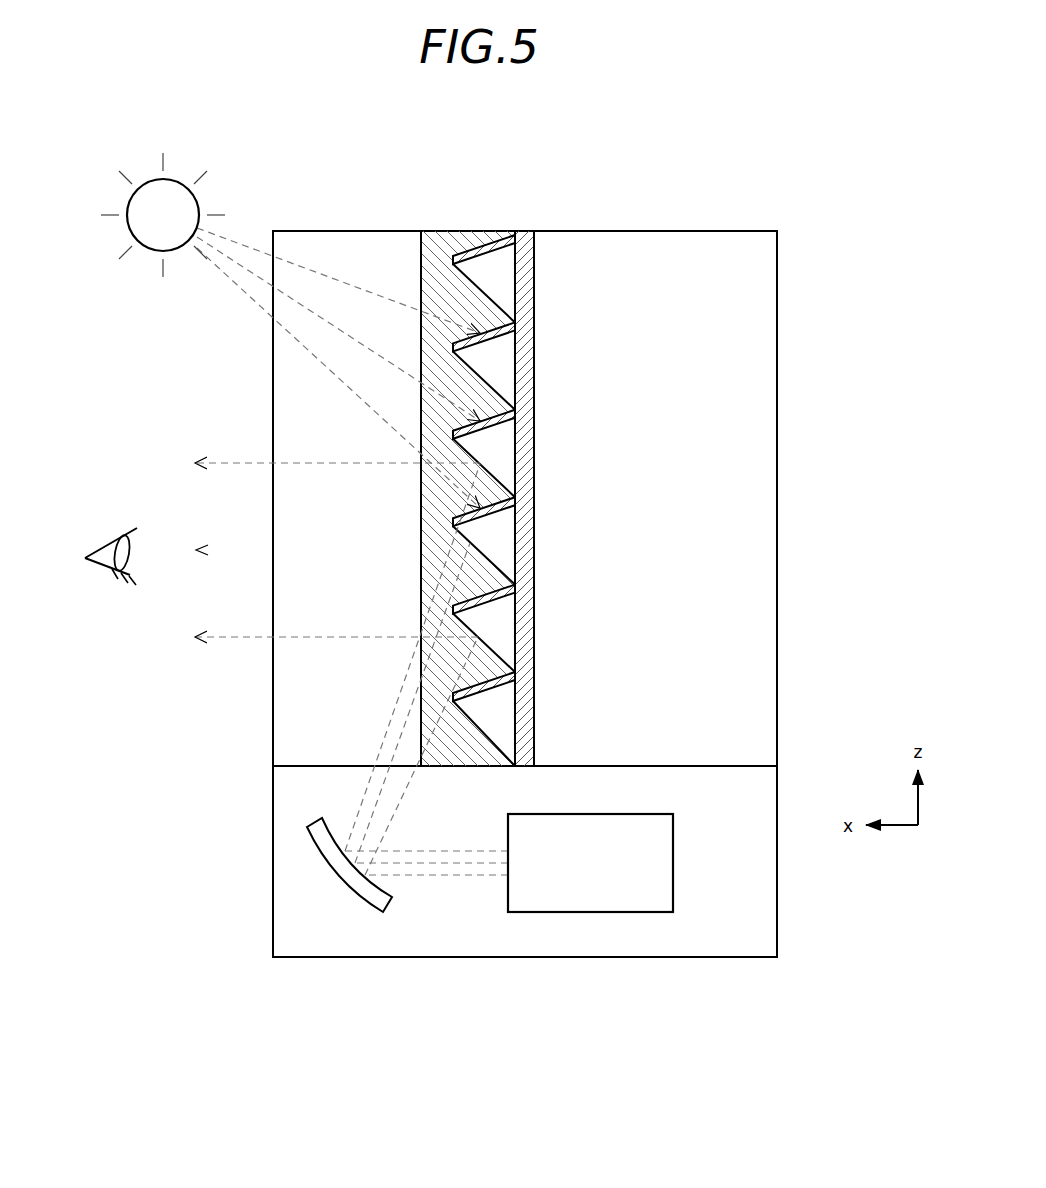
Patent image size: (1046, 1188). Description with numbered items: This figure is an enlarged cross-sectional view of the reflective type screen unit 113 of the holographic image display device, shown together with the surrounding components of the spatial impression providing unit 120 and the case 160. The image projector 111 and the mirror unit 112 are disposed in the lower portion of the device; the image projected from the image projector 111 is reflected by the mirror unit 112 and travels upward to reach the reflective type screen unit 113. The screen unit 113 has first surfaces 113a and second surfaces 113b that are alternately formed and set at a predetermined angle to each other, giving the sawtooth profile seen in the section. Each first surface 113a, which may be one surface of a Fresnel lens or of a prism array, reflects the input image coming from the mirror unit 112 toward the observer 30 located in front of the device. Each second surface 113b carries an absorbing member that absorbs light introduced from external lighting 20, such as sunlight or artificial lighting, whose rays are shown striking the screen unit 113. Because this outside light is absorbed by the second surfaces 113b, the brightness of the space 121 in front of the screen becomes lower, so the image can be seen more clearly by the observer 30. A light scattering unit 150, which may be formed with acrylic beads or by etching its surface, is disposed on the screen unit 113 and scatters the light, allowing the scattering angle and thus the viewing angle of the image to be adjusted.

The external lighting 20 is at (191, 194).
The observer 30 is at (96, 562).
The image projector 111 is at (562, 912).
The mirror unit 112 is at (327, 865).
The screen unit 113 is at (535, 333).
The first surface 113a is at (504, 562).
The second surface 113b is at (498, 522).
The spatial impression providing unit 120 is at (374, 224).
The space 121 is at (315, 680).
The light scattering unit 150 is at (455, 742).
The case 160 is at (699, 480).